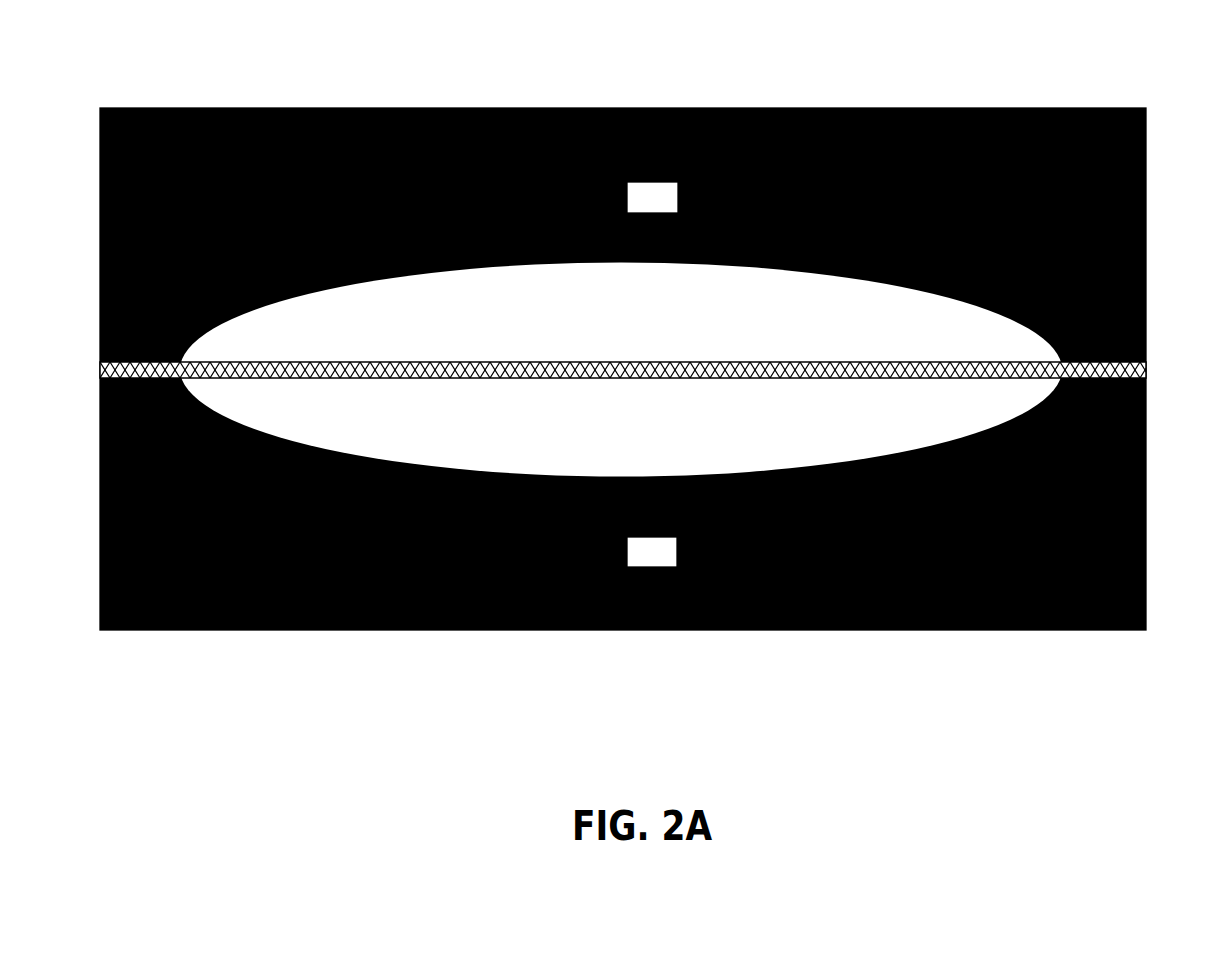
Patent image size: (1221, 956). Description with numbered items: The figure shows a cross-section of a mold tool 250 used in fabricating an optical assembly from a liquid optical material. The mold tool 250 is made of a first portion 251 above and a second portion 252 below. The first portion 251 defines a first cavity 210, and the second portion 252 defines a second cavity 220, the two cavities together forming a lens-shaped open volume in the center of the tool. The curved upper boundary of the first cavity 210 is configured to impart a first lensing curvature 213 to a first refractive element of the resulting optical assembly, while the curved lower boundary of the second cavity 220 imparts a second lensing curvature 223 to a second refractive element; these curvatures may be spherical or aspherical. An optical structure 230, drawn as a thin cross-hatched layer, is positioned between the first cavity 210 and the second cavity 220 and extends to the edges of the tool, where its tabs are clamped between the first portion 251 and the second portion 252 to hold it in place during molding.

The mold tool 250 is at (1146, 107).
The first portion 251 is at (668, 208).
The second portion 252 is at (668, 562).
The first cavity 210 is at (635, 330).
The second cavity 220 is at (642, 440).
The first lensing curvature 213 is at (453, 271).
The second lensing curvature 223 is at (410, 465).
The optical structure 230 is at (100, 367).